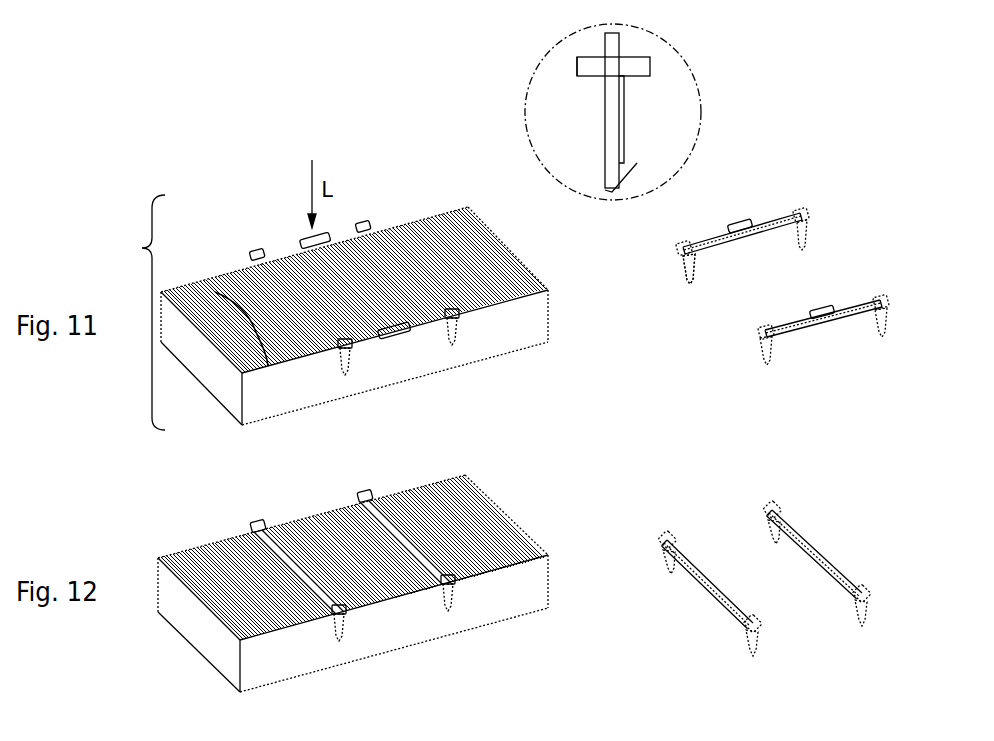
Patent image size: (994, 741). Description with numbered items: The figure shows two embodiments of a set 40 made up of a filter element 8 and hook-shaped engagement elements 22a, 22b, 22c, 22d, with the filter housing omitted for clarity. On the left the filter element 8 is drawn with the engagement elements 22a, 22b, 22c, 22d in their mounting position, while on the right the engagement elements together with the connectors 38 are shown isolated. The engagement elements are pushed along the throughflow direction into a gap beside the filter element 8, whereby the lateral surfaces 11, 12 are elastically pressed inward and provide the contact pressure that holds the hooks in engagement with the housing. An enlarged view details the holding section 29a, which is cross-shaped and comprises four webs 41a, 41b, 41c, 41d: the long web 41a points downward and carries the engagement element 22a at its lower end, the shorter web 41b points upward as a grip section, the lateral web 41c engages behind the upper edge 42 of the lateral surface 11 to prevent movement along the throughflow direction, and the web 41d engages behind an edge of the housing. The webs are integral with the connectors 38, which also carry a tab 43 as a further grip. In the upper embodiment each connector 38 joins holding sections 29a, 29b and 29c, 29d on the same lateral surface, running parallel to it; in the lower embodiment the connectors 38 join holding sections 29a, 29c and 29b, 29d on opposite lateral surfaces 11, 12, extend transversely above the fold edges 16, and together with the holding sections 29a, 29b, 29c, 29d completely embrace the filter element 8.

In FIG. 11, the filter element 8 is at (477, 220).
In FIG. 12, the filter element 8 is at (507, 522).
In FIG. 11, the lateral surface 11 is at (260, 412).
In FIG. 12, the lateral surface 11 is at (260, 678).
In FIG. 11, the lateral surface 12 is at (444, 215).
In FIG. 12, the lateral surface 12 is at (457, 475).
In FIG. 12, the fold edge 16 is at (460, 570).
In FIG. 11, the engagement element 22a is at (345, 375).
In FIG. 12, the engagement element 22a is at (342, 642).
In FIG. 11, the engagement element 22b is at (452, 345).
In FIG. 12, the engagement element 22b is at (450, 613).
In FIG. 11, the engagement element 22c is at (688, 278).
In FIG. 12, the engagement element 22c is at (674, 570).
In FIG. 11, the engagement element 22d is at (800, 252).
In FIG. 12, the engagement element 22d is at (775, 545).
In FIG. 11, the holding section 29a is at (770, 328).
In FIG. 12, the holding section 29a is at (742, 622).
In FIG. 11, the holding section 29b is at (880, 300).
In FIG. 12, the holding section 29b is at (850, 595).
In FIG. 11, the holding section 29c is at (683, 248).
In FIG. 12, the holding section 29c is at (668, 538).
In FIG. 11, the holding section 29d is at (795, 213).
In FIG. 12, the holding section 29d is at (777, 507).
In FIG. 11, the connector 38 is at (417, 328).
In FIG. 12, the connector 38 is at (253, 528).
In FIG. 11, the set 40 is at (132, 312).
In FIG. 11, the web 41a is at (624, 125).
In FIG. 11, the web 41b is at (620, 42).
In FIG. 11, the web 41c is at (577, 66).
In FIG. 11, the web 41d is at (650, 66).
In FIG. 11, the upper edge 42 is at (215, 292).
In FIG. 11, the tab 43 is at (817, 328).